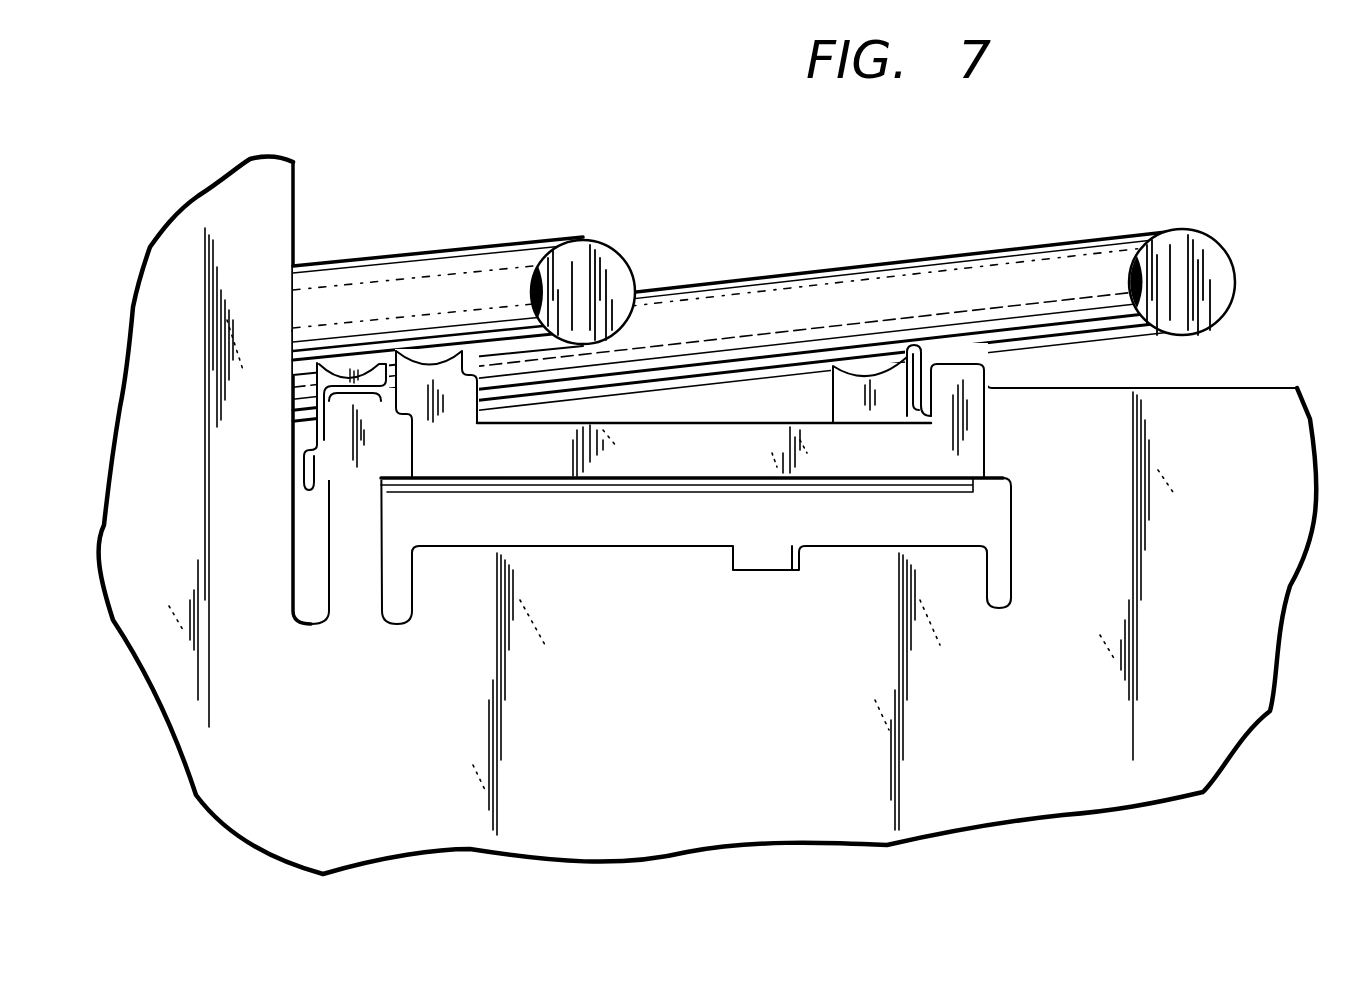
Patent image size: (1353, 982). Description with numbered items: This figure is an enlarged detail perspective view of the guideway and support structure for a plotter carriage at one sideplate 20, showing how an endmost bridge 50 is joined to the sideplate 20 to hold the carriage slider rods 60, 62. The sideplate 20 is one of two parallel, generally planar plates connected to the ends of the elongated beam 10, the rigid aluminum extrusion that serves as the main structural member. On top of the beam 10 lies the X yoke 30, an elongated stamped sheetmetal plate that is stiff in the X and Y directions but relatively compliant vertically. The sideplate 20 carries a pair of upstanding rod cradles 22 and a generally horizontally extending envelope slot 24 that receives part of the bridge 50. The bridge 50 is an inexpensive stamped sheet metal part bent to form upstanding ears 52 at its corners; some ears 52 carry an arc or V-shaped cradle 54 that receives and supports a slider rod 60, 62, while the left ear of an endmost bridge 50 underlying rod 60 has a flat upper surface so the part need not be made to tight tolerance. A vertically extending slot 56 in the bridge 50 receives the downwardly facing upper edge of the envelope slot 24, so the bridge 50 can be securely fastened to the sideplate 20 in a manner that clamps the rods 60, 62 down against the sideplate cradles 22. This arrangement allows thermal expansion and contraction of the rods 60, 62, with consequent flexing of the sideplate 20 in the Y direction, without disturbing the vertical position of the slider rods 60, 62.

The elongated beam 10 is at (1214, 150).
The sideplate 20 is at (736, 731).
The rod cradles 22 is at (428, 355).
The envelope slot 24 is at (660, 542).
The X yoke 30 is at (772, 494).
The bridge 50 is at (704, 466).
The ears 52 is at (990, 432).
The cradle 54 is at (443, 358).
The vertically extending slot 56 is at (389, 477).
The carriage slider rod 60 is at (1080, 272).
The carriage slider rod 62 is at (527, 255).